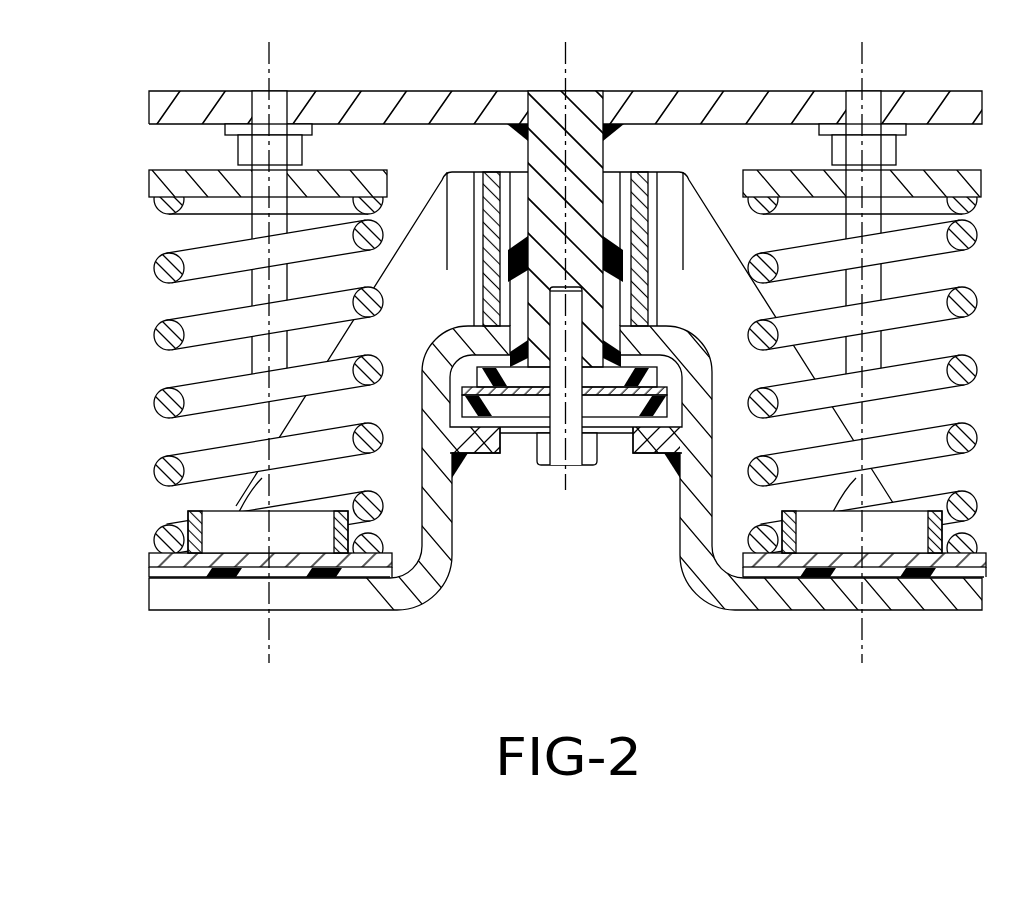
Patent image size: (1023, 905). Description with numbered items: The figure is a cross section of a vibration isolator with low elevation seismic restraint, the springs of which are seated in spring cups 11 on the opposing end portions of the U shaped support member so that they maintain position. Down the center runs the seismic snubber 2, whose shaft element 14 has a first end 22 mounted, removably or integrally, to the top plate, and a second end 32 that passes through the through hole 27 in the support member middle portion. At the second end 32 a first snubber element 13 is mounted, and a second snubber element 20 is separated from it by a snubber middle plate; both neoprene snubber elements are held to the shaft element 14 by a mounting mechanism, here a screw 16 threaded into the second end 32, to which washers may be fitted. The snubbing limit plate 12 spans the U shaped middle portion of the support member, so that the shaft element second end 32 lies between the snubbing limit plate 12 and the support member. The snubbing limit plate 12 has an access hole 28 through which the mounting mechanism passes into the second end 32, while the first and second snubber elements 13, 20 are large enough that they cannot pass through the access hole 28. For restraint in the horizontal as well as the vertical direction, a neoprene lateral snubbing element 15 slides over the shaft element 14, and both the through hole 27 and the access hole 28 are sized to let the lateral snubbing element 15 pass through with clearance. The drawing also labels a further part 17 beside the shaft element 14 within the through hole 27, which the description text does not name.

The seismic snubber 2 is at (489, 150).
The spring cups 11 is at (237, 533).
The snubbing limit plate 12 is at (638, 443).
The first snubber element 13 is at (527, 375).
The shaft element 14 is at (588, 100).
The lateral snubbing element 15 is at (607, 197).
The screw 16 is at (558, 457).
The bushing 17 is at (642, 232).
The second snubber element 20 is at (525, 403).
The first end 22 is at (545, 100).
The through hole 27 is at (488, 314).
The access hole 28 is at (602, 448).
The second end 32 is at (597, 355).